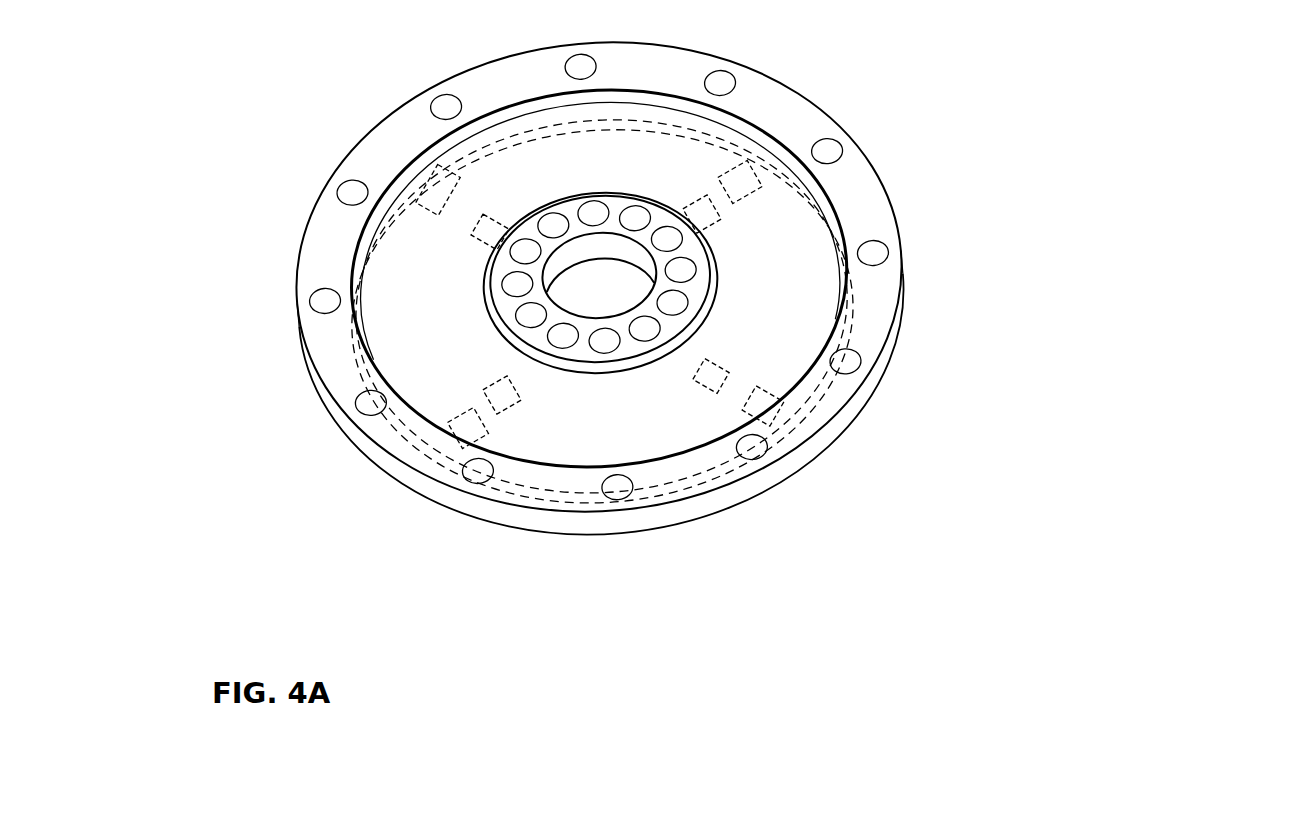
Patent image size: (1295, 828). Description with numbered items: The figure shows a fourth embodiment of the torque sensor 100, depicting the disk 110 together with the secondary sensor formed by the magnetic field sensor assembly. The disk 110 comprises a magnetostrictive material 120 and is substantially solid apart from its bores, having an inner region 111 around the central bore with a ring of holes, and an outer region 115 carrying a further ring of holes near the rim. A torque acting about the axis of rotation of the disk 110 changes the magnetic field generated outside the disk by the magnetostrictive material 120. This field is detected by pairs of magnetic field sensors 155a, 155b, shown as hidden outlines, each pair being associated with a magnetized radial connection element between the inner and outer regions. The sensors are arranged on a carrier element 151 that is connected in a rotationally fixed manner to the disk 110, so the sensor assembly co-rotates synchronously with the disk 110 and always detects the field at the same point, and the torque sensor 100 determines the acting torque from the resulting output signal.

The torque sensor 100 is at (701, 336).
The disk 110 is at (902, 235).
The inner region 111 is at (507, 303).
The outer region 115 is at (845, 188).
The magnetostrictive material 120 is at (403, 277).
The carrier element 151 is at (778, 326).
The magnetic field sensor 155a is at (712, 376).
The magnetic field sensor 155b is at (757, 402).